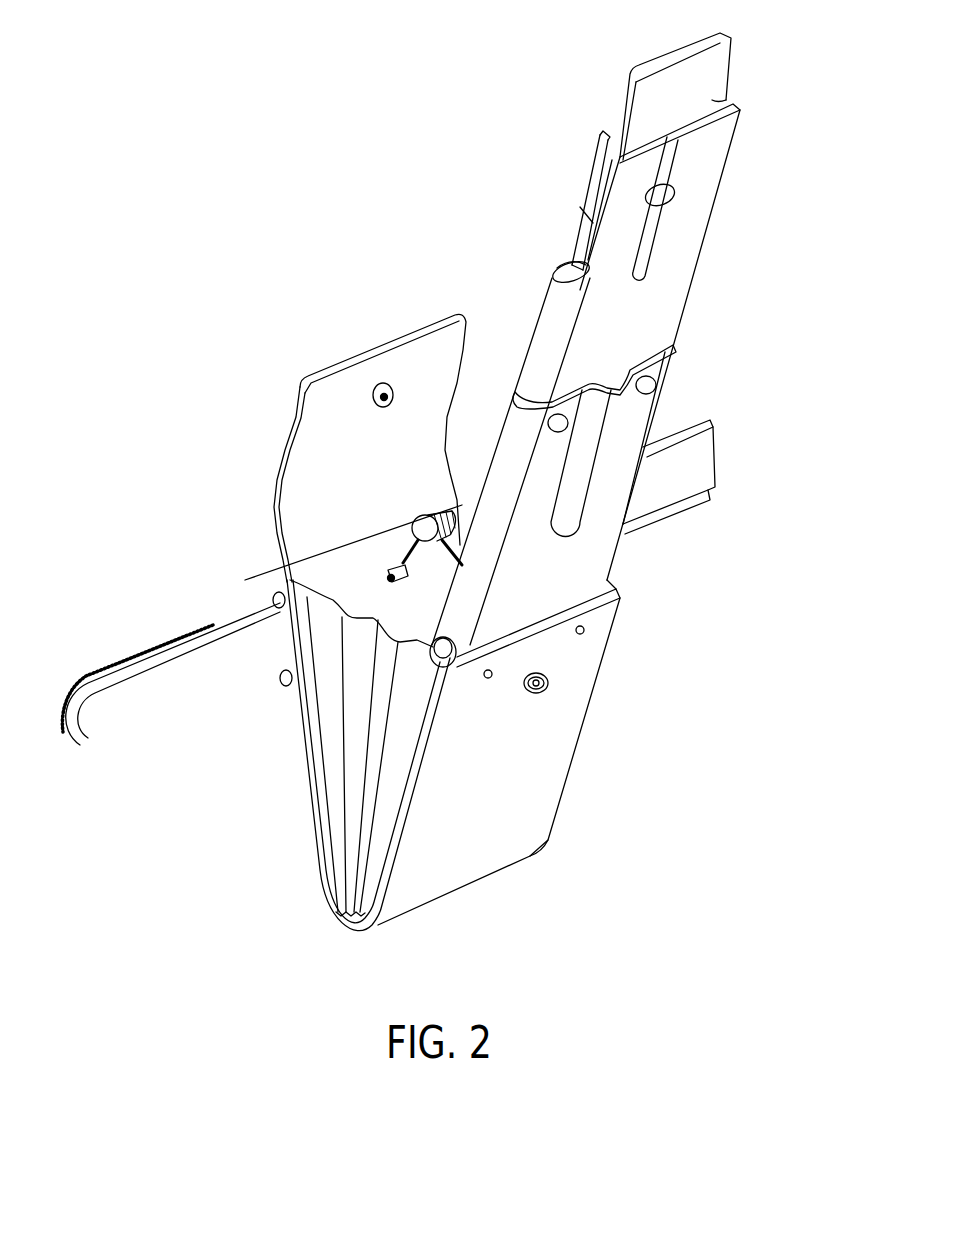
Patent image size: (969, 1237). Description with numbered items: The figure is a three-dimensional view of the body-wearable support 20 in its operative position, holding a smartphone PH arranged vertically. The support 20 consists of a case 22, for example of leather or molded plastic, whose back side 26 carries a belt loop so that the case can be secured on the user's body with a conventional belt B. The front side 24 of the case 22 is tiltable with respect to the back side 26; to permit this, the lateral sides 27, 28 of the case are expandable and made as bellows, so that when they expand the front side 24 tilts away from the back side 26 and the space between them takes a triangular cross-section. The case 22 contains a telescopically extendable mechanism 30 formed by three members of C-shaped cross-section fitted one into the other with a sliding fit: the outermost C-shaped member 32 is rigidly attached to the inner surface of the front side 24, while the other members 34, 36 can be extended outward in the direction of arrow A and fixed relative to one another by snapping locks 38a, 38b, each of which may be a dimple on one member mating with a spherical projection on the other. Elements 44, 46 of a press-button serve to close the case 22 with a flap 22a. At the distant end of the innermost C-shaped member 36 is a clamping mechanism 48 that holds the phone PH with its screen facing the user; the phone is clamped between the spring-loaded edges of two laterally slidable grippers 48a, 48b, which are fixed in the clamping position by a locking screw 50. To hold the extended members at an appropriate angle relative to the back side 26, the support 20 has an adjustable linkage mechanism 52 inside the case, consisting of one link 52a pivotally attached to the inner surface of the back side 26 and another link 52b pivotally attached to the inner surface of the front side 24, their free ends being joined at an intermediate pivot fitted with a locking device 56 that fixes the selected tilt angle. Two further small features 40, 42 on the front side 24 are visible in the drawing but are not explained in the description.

The body-wearable support 20 is at (458, 221).
The smartphone PH is at (623, 83).
The innermost C-shaped member 36 is at (683, 238).
The locking screw 50 is at (670, 198).
The clamping mechanism 48 is at (580, 190).
The laterally slidable gripper 48a is at (587, 173).
The laterally slidable gripper 48b is at (717, 100).
The arrow indicating outward direction A is at (515, 330).
The C-shaped member 34 is at (532, 446).
The telescopically extendable mechanism 30 is at (684, 355).
The snapping lock 38a is at (650, 384).
The snapping lock 38b is at (558, 425).
The belt B is at (687, 467).
The flap 22a is at (313, 400).
The press-button element 46 is at (388, 386).
The adjustable linkage mechanism 52 is at (398, 506).
The locking device 56 is at (406, 526).
The link 52a is at (327, 573).
The link 52b is at (455, 560).
The back side 26 is at (285, 586).
The case 22 is at (602, 687).
The lateral side 28 is at (620, 578).
The front side 24 is at (513, 846).
The hole 40 is at (585, 630).
The hole 42 is at (490, 678).
The press-button element 44 is at (548, 685).
The outermost C-shaped member 32 is at (445, 672).
The lateral side 27 is at (343, 736).